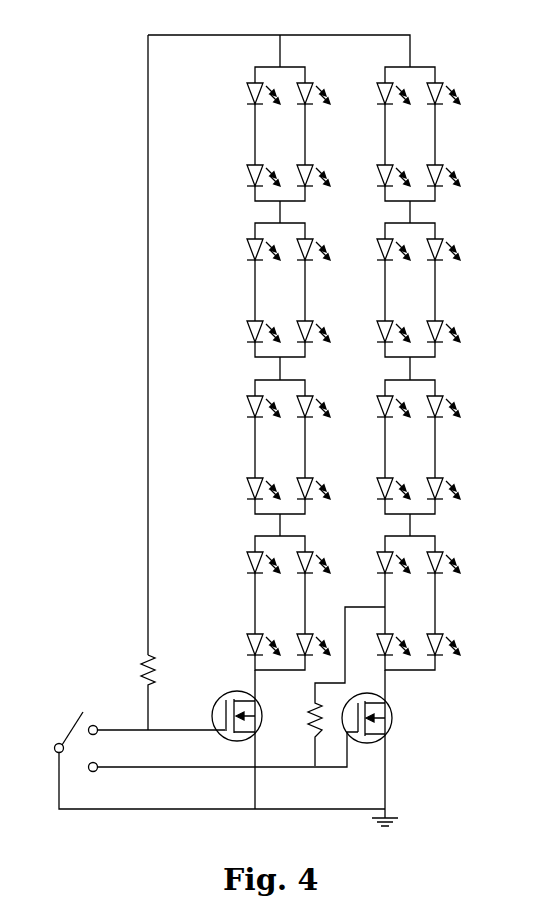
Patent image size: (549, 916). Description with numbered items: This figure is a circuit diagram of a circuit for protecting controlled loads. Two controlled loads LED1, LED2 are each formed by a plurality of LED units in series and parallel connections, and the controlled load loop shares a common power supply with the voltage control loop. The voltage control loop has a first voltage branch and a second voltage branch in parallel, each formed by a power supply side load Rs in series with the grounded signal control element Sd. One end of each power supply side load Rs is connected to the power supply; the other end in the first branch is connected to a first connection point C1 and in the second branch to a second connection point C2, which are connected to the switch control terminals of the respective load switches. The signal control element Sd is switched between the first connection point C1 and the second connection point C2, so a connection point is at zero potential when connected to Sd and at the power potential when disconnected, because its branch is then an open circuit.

The first controlled load LED1 is at (271, 354).
The second controlled load LED2 is at (407, 346).
The power supply side load Rs is at (243, 686).
The signal control element Sd is at (220, 760).
The first connection point C1 is at (198, 739).
The second connection point C2 is at (347, 748).